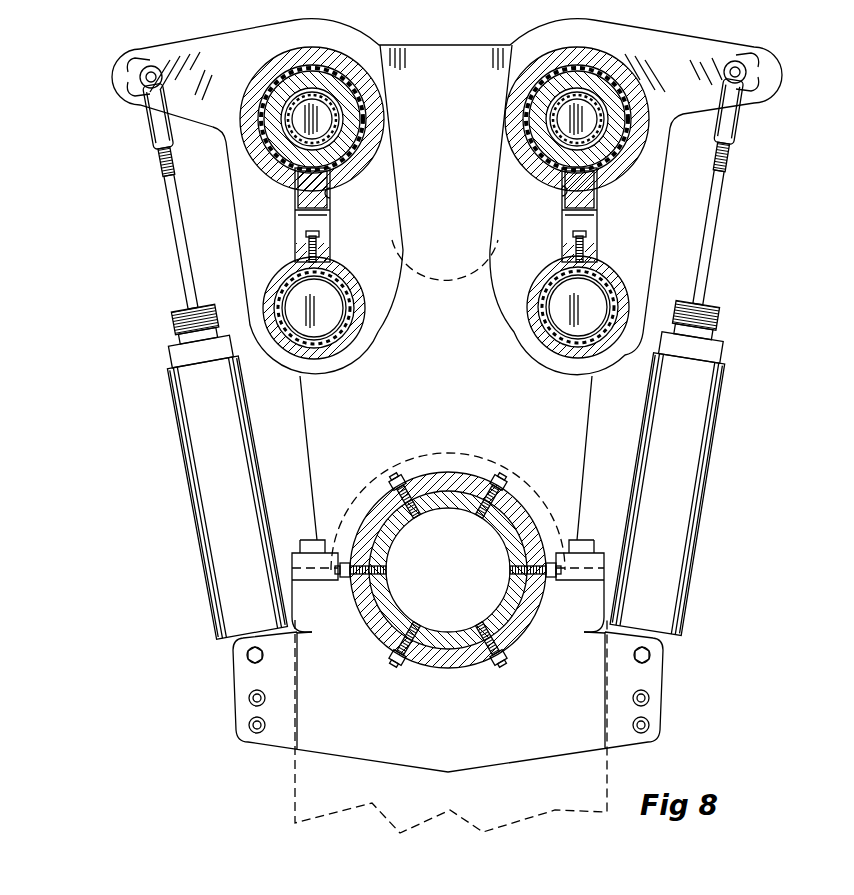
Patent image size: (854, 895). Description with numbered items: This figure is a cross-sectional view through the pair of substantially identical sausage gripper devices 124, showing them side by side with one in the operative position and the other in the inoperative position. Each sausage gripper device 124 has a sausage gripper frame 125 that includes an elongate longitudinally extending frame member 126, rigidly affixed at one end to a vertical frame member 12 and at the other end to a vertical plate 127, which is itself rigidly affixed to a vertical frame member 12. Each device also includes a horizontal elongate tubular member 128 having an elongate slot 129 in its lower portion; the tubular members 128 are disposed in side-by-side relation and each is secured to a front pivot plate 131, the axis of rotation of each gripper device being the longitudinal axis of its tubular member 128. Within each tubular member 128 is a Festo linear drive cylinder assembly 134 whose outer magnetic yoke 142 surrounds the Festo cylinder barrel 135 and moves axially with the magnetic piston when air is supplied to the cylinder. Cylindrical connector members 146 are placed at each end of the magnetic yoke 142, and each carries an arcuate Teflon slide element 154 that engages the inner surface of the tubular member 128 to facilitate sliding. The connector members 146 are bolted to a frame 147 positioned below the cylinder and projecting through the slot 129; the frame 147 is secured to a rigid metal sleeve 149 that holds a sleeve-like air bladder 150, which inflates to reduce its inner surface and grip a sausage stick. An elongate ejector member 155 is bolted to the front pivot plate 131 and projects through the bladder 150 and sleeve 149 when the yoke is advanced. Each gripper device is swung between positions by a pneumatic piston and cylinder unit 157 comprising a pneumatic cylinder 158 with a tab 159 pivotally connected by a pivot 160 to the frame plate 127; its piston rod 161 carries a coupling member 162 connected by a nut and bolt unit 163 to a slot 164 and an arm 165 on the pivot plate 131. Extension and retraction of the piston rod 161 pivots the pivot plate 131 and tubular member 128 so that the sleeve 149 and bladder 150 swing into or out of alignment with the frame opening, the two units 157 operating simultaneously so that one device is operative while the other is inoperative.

The vertical frame member 12 is at (292, 788).
The sausage gripper device 124 is at (228, 84).
The sausage gripper frame 125 is at (456, 681).
The longitudinally extending frame member 126 is at (417, 668).
The vertical plate 127 is at (438, 44).
The tubular member 128 is at (505, 90).
The slot 129 is at (563, 190).
The front pivot plate 131 is at (495, 256).
The Festo linear drive cylinder assembly 134 is at (262, 158).
The Festo cylinder barrel 135 is at (300, 88).
The outer magnetic yoke 142 is at (512, 160).
The connector member 146 is at (530, 120).
The frame 147 is at (333, 230).
The rigid sleeve 149 is at (318, 363).
The air bladder 150 is at (340, 350).
The slide element 154 is at (517, 107).
The ejector member 155 is at (332, 312).
The piston and cylinder unit 157 is at (165, 383).
The pneumatic cylinder 158 is at (192, 447).
The tab 159 is at (248, 655).
The pivot 160 is at (256, 662).
The piston rod 161 is at (178, 235).
The coupling member 162 is at (152, 143).
The nut and bolt unit 163 is at (143, 88).
The slot 164 is at (137, 75).
The arm 165 is at (148, 66).